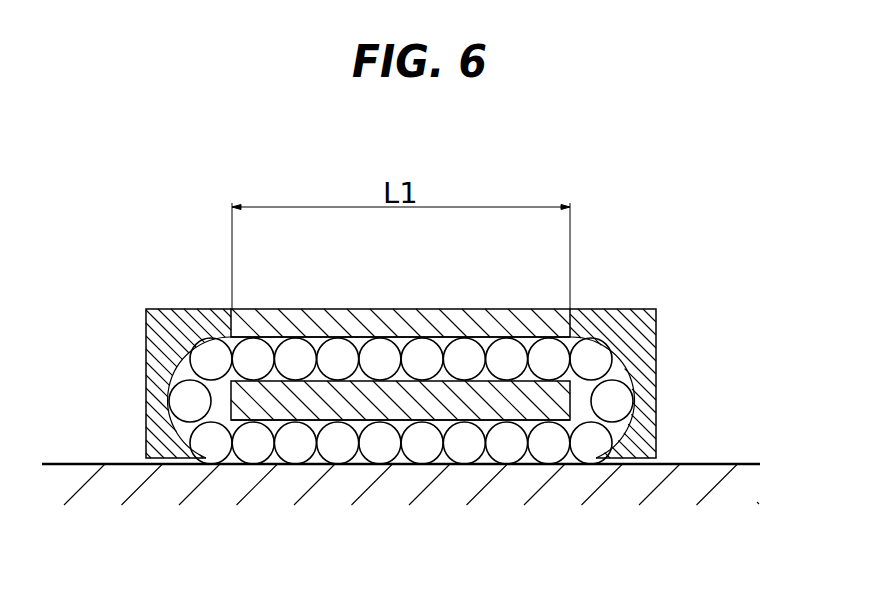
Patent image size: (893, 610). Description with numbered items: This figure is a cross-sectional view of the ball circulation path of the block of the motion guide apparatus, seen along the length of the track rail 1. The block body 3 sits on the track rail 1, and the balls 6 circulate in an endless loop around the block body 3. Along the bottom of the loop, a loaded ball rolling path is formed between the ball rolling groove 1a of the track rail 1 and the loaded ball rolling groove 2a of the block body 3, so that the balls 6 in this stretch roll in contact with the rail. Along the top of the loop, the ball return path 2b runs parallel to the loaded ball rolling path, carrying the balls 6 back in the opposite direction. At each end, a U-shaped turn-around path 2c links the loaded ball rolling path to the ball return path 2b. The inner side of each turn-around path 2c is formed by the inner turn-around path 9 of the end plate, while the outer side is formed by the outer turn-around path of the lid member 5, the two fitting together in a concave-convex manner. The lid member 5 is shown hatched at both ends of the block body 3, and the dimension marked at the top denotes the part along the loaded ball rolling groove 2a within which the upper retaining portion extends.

The track rail 1 is at (742, 470).
The ball rolling groove 1a is at (690, 463).
The loaded ball rolling groove 2a is at (408, 428).
The ball return path 2b is at (421, 345).
The U-shaped turn-around path 2c is at (172, 357).
The block body 3 is at (371, 309).
The lid member 5 is at (160, 330).
The ball 6 is at (511, 448).
The inner turn-around path 9 is at (214, 385).